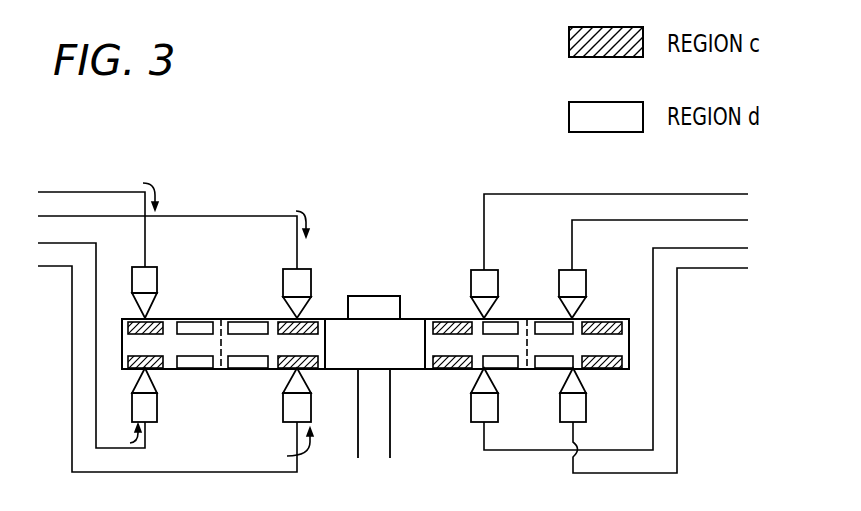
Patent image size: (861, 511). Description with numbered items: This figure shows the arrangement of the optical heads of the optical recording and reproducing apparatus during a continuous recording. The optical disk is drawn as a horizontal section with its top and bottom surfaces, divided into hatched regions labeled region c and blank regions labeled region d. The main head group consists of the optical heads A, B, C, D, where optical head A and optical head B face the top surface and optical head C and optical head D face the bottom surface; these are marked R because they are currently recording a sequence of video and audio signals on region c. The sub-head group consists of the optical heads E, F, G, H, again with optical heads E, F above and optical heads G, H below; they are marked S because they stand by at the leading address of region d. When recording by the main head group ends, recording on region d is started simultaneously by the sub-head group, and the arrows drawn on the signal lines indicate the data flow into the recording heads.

The optical head A is at (157, 281).
The optical head B is at (311, 283).
The optical head C is at (157, 398).
The optical head D is at (311, 398).
The optical head E is at (498, 284).
The optical head F is at (586, 284).
The optical head G is at (498, 398).
The optical head H is at (586, 398).